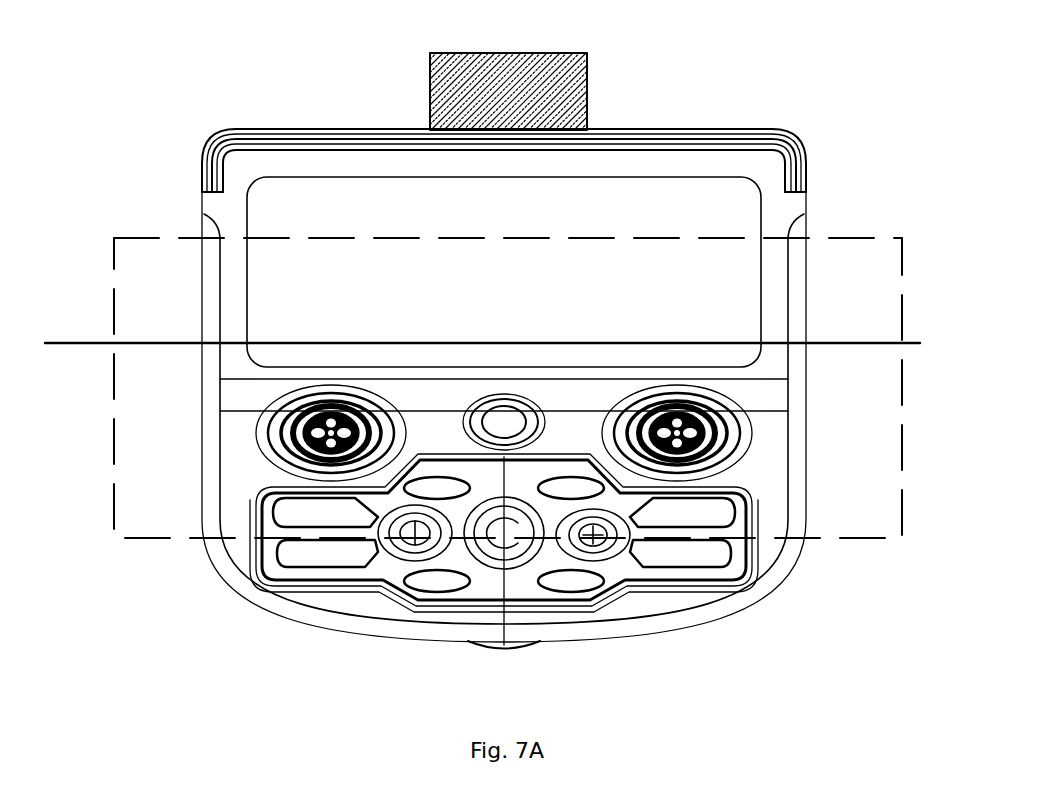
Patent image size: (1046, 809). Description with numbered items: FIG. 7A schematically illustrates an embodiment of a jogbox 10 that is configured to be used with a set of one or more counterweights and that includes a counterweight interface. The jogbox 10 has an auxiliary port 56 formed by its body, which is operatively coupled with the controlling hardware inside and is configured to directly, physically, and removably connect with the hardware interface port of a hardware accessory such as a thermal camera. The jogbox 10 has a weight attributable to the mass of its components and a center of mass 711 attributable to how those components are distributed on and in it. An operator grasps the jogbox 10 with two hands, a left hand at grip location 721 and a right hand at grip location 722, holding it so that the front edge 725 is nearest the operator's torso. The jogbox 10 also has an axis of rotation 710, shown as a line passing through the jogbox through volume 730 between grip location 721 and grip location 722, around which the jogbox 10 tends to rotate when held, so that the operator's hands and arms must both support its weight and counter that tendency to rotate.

The jogbox 10 is at (360, 112).
The auxiliary port 56 is at (597, 106).
The axis of rotation 710 is at (928, 346).
The center of mass 711 is at (492, 350).
The grip location 721 is at (188, 366).
The grip location 722 is at (830, 368).
The front edge 725 is at (600, 670).
The volume 730 is at (924, 503).